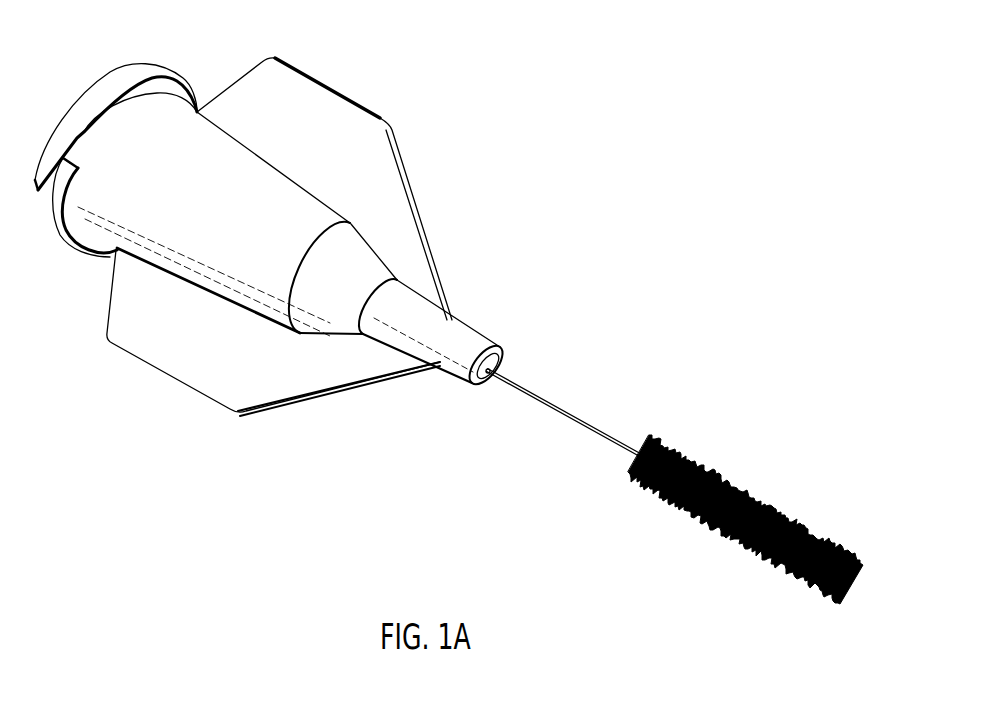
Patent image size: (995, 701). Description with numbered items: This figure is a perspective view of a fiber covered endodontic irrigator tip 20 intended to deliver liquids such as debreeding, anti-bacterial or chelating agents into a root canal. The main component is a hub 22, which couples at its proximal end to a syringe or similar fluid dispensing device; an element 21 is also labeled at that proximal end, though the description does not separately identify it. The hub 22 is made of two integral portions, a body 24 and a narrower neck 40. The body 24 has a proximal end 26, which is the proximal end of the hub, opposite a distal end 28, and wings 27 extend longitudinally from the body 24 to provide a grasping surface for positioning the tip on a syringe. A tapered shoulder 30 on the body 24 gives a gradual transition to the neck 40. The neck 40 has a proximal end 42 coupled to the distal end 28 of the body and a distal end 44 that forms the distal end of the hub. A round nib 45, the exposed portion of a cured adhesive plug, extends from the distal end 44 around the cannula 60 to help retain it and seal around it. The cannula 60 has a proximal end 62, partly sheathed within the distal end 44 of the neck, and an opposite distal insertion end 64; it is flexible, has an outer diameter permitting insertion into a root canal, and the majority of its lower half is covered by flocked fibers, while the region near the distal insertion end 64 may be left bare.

The endodontic irrigator tip 20 is at (556, 207).
The cap 21 is at (103, 70).
The hub 22 is at (211, 79).
The body 24 is at (143, 208).
The proximal end 26 is at (92, 217).
The wings 27 is at (332, 108).
The distal end 28 is at (385, 282).
The shoulder 30 is at (357, 250).
The neck 40 is at (437, 345).
The proximal end 42 is at (378, 302).
The distal end 44 is at (484, 338).
The round nib 45 is at (497, 363).
The cannula 60 is at (584, 420).
The proximal end 62 is at (493, 377).
The distal insertion end 64 is at (862, 587).